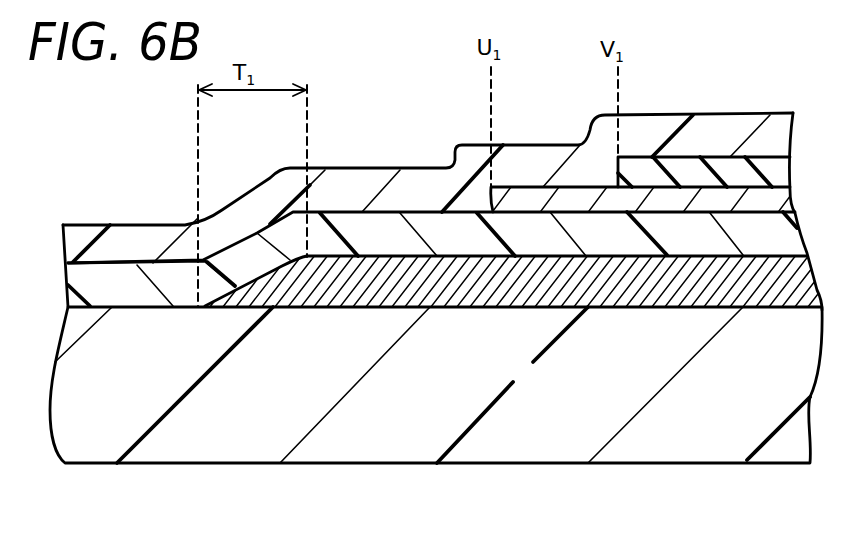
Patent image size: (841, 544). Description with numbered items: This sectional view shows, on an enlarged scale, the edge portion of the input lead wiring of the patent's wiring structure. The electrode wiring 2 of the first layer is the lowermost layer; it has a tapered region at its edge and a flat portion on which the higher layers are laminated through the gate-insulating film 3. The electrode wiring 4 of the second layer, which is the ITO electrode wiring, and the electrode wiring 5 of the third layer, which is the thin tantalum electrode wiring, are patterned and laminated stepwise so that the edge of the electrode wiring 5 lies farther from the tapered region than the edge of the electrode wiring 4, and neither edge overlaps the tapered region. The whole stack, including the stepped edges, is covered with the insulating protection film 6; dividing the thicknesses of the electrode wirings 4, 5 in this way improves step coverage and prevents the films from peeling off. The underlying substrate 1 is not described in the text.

The substrate 1 is at (737, 430).
The electrode wiring of the first layer 2 is at (525, 283).
The gate-insulating film 3 is at (130, 290).
The electrode wiring of the second layer 4 is at (737, 196).
The electrode wiring of the third layer 5 is at (673, 166).
The insulating protection film 6 is at (412, 187).